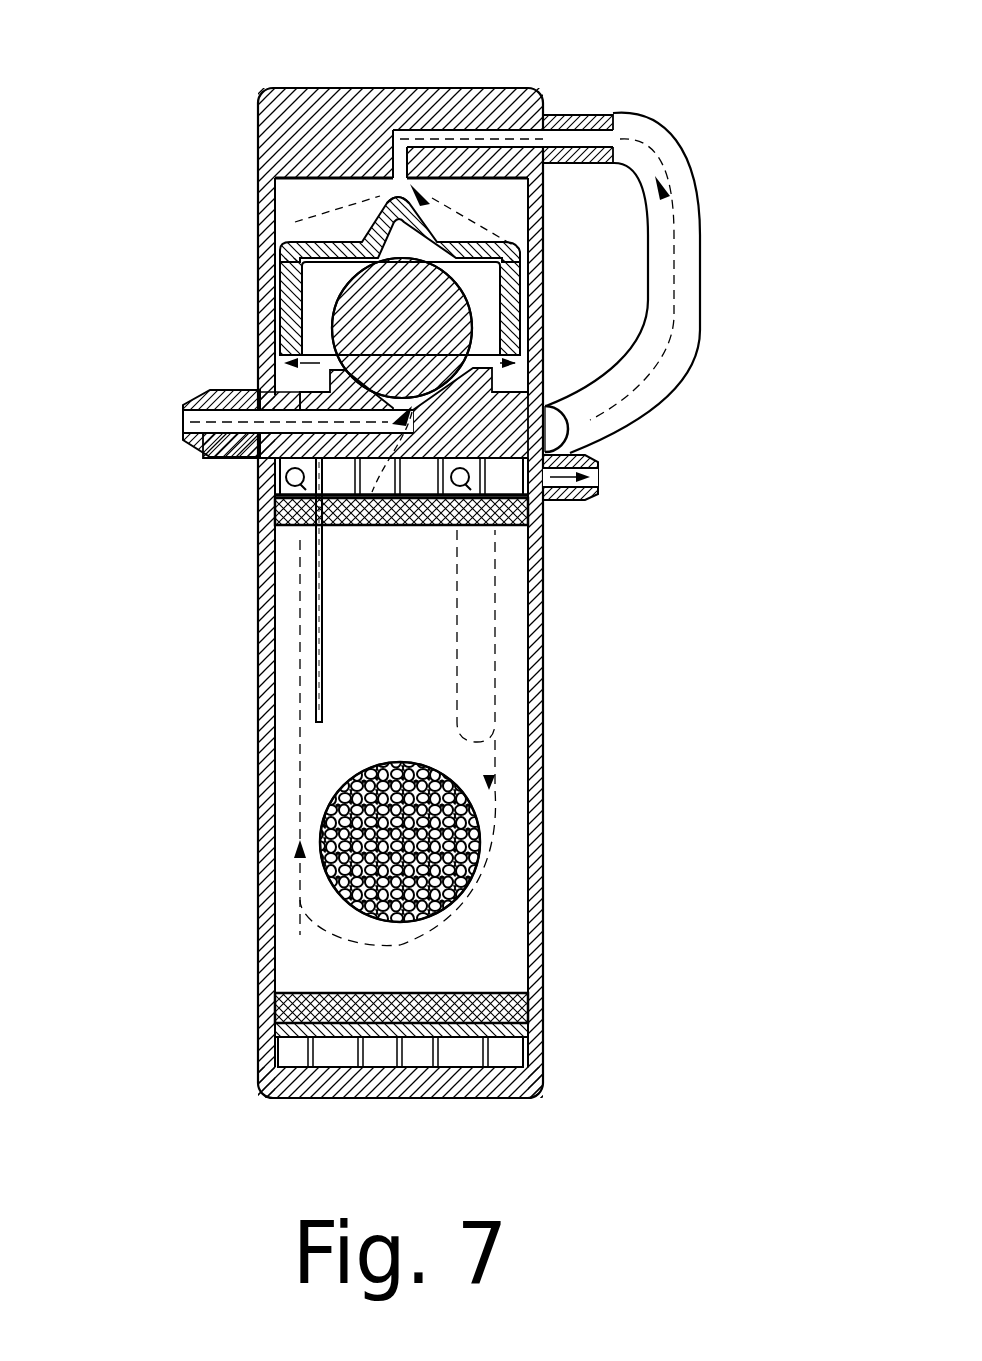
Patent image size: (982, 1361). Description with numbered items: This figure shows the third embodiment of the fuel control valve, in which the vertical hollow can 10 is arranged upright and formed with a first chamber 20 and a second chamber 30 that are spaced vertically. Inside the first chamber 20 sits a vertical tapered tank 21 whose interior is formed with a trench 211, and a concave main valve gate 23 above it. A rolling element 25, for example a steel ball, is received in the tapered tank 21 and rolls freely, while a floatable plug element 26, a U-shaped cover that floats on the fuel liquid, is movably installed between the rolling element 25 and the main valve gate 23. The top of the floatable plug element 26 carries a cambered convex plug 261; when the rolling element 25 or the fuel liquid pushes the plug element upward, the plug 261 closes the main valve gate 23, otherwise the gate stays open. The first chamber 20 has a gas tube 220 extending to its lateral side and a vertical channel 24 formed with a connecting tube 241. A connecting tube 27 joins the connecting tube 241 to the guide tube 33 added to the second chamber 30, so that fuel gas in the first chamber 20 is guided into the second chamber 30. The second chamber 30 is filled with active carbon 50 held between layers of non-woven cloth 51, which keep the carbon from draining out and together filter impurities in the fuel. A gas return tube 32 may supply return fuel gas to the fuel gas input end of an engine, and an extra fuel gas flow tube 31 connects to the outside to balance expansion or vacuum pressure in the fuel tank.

The housing body 10 is at (262, 660).
The first chamber 20 is at (305, 205).
The tapered tank 21 is at (300, 520).
The main valve gate 23 is at (400, 180).
The vertical channel 24 is at (437, 147).
The connecting tube 241 is at (573, 113).
The rolling element 25 is at (343, 283).
The floatable plug element 26 is at (300, 242).
The cambered convex plug 261 is at (375, 212).
The trench 211 is at (323, 385).
The gas tube 220 is at (184, 420).
The connecting tube 27 is at (680, 310).
The second chamber 30 is at (498, 930).
The extra fuel gas flow tube 31 is at (265, 473).
The gas return tube 32 is at (600, 480).
The guide tube 33 is at (575, 425).
The active carbon 50 is at (480, 858).
The non-woven cloth 51 is at (500, 1000).